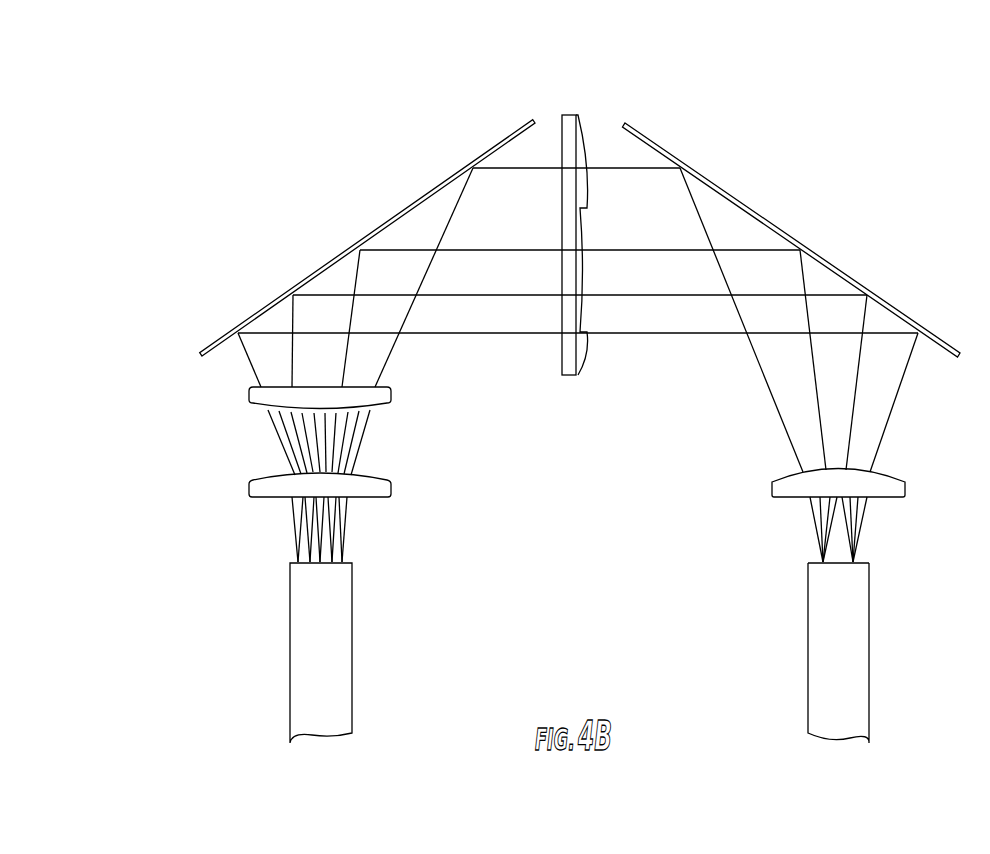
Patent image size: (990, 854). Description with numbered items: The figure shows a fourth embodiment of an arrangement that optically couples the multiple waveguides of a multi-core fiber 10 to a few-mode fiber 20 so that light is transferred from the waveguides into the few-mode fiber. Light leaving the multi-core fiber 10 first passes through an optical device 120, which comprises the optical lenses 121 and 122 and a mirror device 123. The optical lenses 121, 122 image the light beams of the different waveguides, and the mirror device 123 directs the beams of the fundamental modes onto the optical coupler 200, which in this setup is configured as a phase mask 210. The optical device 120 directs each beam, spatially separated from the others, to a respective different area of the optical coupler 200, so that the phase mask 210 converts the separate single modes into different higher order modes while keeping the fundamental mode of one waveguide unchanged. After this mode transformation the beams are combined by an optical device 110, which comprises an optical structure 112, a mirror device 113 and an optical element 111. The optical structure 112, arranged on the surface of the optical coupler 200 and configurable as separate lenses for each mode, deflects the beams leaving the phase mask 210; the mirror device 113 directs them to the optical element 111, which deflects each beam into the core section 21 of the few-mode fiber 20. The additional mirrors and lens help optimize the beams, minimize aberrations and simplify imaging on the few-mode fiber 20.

The multi-core fiber 10 is at (290, 650).
The few-mode fiber 20 is at (863, 653).
The core section 21 is at (836, 596).
The optical device 110 is at (768, 312).
The optical element 111 is at (873, 471).
The optical structure 112 is at (590, 136).
The mirror device 113 is at (770, 216).
The optical device 120 is at (345, 341).
The optical lens 121 is at (379, 488).
The optical lens 122 is at (379, 392).
The mirror device 123 is at (384, 226).
The optical coupler 200 is at (539, 206).
The phase mask 210 is at (568, 113).